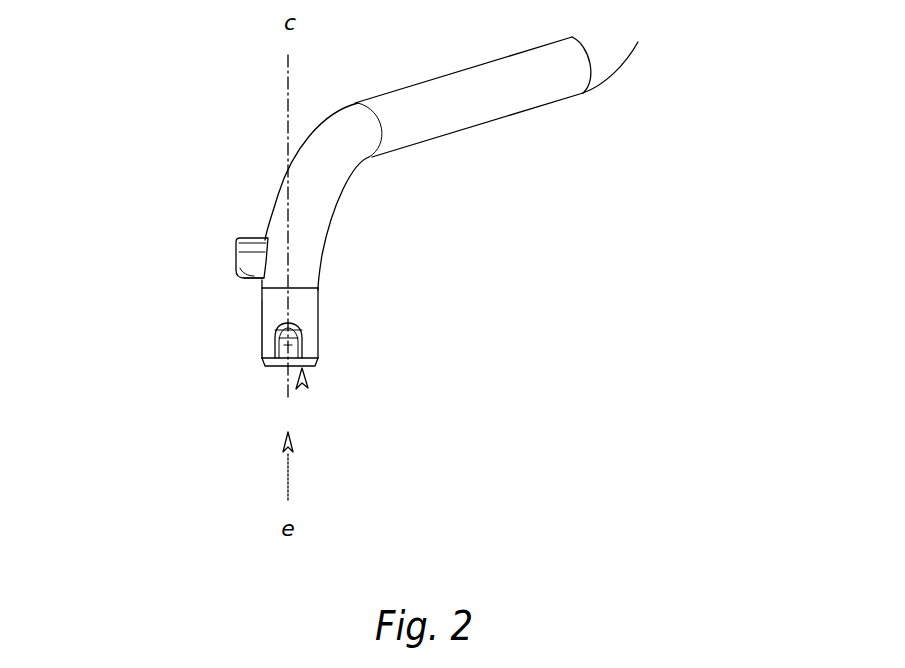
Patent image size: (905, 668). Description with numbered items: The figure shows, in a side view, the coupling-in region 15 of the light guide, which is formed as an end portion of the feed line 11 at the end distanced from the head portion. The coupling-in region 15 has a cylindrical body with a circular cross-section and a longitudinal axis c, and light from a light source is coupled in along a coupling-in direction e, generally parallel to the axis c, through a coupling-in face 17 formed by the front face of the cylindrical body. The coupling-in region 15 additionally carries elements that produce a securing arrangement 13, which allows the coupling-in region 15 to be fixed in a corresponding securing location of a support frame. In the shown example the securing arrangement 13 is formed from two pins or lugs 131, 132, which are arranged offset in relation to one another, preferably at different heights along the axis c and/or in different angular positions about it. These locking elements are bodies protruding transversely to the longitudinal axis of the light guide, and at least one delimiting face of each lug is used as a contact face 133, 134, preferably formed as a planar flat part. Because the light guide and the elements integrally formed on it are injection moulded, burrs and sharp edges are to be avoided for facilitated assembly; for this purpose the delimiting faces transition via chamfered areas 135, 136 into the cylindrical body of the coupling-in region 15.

The feed line 11 is at (502, 104).
The securing arrangement 13 is at (182, 266).
The coupling-in region 15 is at (368, 232).
The coupling-in face 17 is at (303, 385).
The lug 131 is at (290, 345).
The lug 132 is at (237, 258).
The contact face 133 is at (293, 324).
The contact face 134 is at (250, 281).
The chamfered area 135 is at (300, 338).
The chamfered area 136 is at (246, 276).